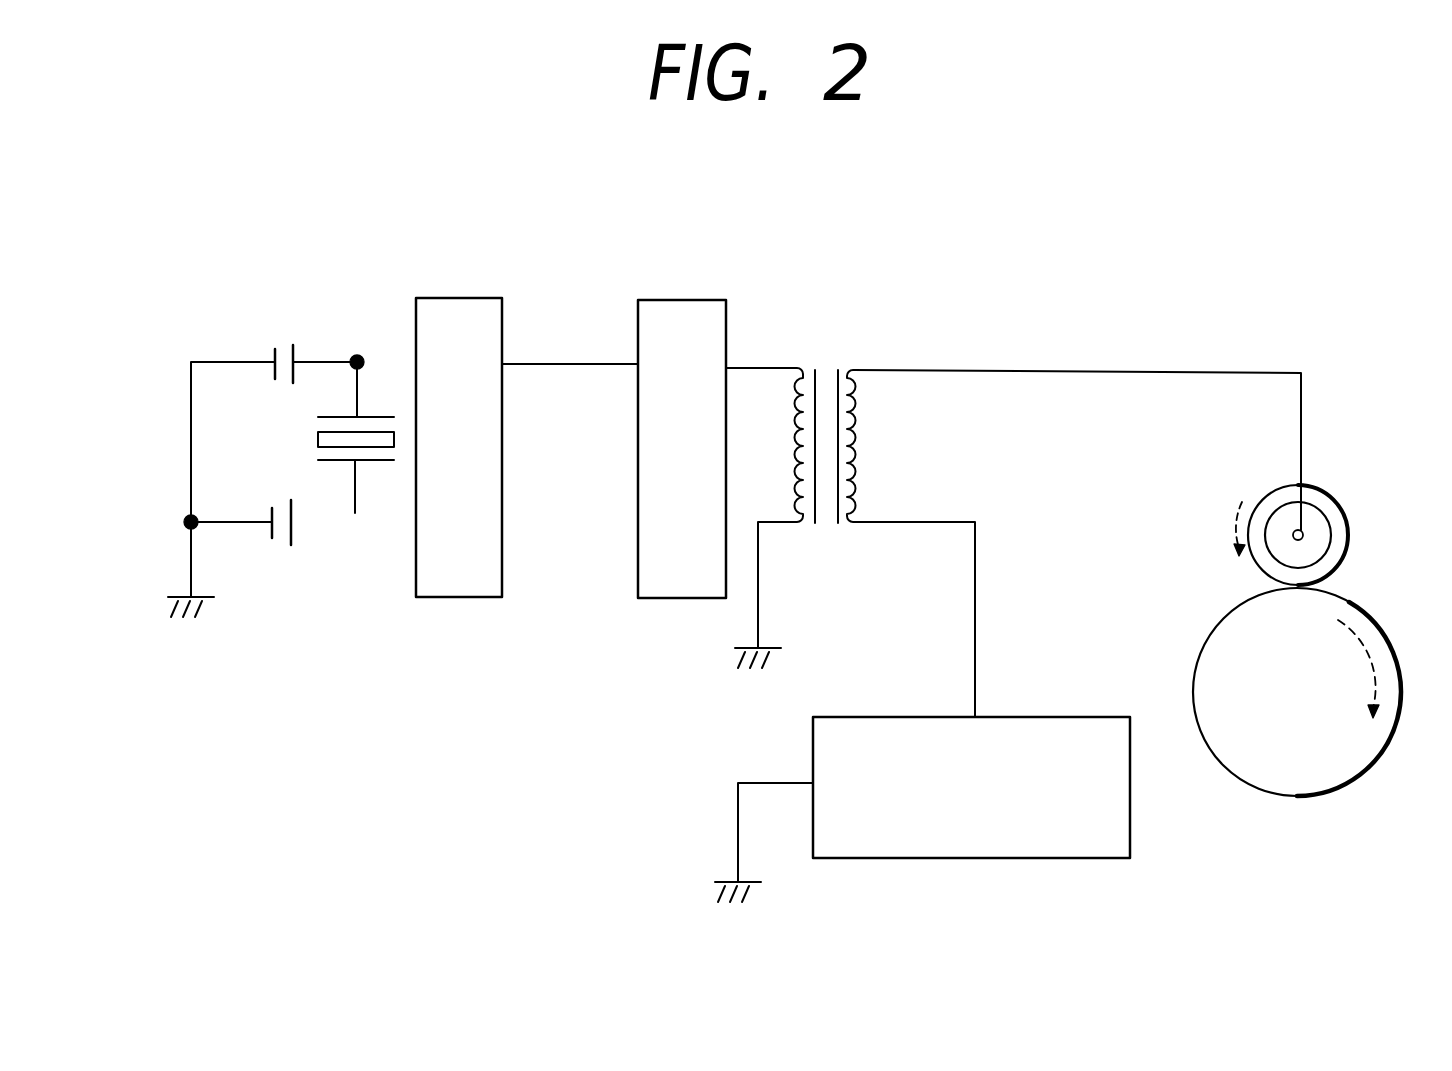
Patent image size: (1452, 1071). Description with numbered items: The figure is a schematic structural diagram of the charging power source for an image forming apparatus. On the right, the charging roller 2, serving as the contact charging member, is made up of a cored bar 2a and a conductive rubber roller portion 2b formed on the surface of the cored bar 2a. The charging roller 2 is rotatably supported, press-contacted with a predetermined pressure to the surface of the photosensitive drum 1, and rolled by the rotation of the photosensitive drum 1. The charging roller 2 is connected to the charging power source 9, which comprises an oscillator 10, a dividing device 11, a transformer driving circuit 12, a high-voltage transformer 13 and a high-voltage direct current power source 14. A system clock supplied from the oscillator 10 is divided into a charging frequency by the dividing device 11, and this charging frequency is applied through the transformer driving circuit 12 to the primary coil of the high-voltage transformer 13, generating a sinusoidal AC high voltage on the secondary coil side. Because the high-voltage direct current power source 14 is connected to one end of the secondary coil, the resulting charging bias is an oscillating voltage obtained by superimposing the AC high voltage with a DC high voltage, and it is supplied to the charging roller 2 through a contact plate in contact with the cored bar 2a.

The photosensitive drum 1 is at (1228, 626).
The charging roller 2 is at (1337, 455).
The cored bar 2a is at (1313, 515).
The conductive rubber roller portion 2b is at (1340, 548).
The charging power source 9 is at (1013, 466).
The oscillator 10 is at (313, 436).
The dividing device 11 is at (450, 292).
The transformer driving circuit 12 is at (670, 298).
The high-voltage transformer 13 is at (827, 370).
The high-voltage direct current power source 14 is at (1047, 718).